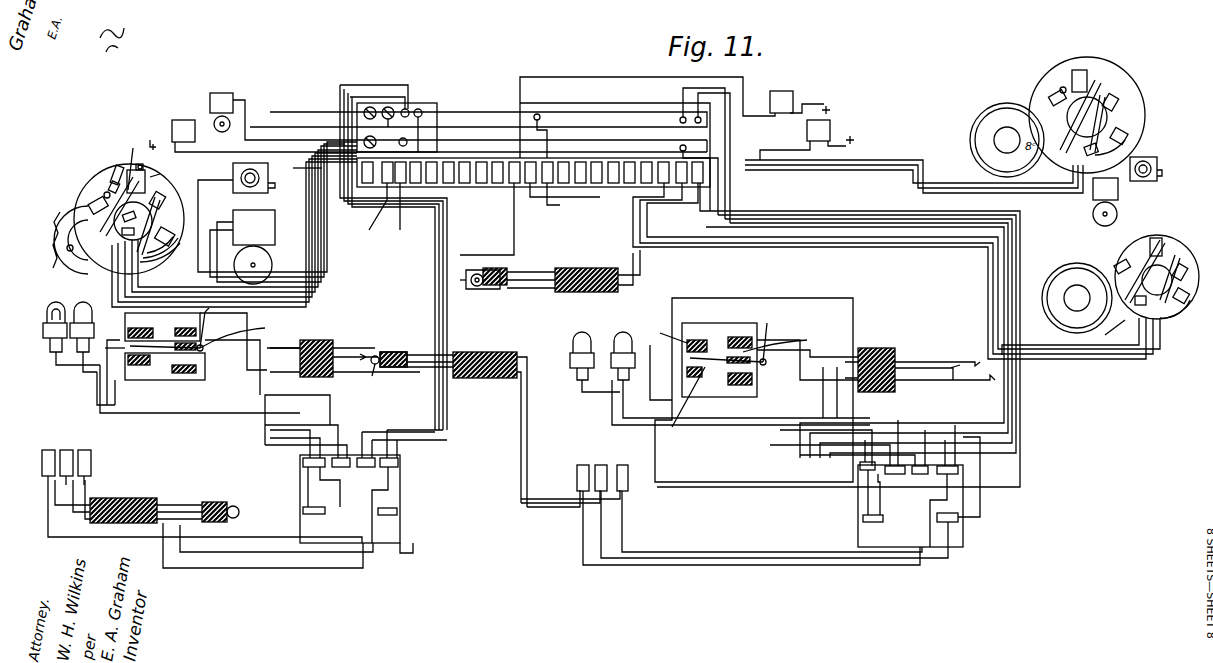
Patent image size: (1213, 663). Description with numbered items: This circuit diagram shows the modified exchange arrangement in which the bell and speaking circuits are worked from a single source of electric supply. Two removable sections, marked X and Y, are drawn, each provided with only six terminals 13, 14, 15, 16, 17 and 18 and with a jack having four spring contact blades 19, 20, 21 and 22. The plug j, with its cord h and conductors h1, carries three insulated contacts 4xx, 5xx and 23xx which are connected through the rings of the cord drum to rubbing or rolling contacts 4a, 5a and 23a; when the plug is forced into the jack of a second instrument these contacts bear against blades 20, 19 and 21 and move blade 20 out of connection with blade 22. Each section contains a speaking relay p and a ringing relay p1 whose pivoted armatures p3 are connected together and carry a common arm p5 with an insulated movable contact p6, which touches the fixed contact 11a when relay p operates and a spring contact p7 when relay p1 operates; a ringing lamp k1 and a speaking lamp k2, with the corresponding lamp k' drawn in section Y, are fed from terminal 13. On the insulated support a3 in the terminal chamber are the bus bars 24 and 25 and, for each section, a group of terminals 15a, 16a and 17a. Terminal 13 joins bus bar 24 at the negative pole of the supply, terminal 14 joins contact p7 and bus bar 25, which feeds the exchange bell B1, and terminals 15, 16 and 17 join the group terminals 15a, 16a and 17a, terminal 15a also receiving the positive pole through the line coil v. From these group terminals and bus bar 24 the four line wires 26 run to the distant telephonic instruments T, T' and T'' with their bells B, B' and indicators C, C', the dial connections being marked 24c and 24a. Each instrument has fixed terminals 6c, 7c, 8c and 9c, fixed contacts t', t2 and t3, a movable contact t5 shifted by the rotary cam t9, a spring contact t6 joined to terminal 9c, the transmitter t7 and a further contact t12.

The telephonic instrument T is at (117, 219).
The second dial switch T' is at (1080, 103).
The third dial switch T'' is at (1137, 272).
The fixed contact t2 is at (126, 160).
The fixed contact t3 is at (129, 220).
The movable contact t5 is at (161, 204).
The spring contact t6 is at (142, 166).
The telephonic transmitter t7 is at (104, 192).
The rotary cam t9 is at (129, 236).
The contact t12 is at (160, 176).
The fixed contact t' is at (166, 242).
The fixed terminal 6c is at (92, 207).
The fixed terminal 7c is at (161, 257).
The fixed terminal 8c is at (70, 240).
The fixed terminal 9c is at (148, 170).
The dial leads 24c is at (217, 228).
The leads 24a is at (1095, 360).
The telephone bell B is at (283, 214).
The exchange bell B1 is at (458, 104).
The battery B' is at (1088, 211).
The indicator C is at (277, 207).
The condenser C' is at (1143, 183).
The line coil v is at (502, 118).
The line wires 26 is at (683, 175).
The bus bar 24 is at (490, 154).
The bus bar 25 is at (649, 176).
The insulated support a3 is at (610, 94).
The terminal 15 is at (362, 178).
The group terminal 15a is at (662, 197).
The group terminal 16a is at (692, 200).
The group terminal 17a is at (745, 187).
The plug contact 4xx is at (560, 204).
The plug contact 5xx is at (512, 185).
The plug contact 23xx is at (500, 200).
The station X is at (393, 257).
The station Y is at (901, 287).
The jack spring contact blade 19 is at (392, 376).
The jack spring contact blade 20 is at (338, 350).
The jack spring contact blade 21 is at (360, 345).
The jack spring contact blade 22 is at (336, 378).
The plug j is at (150, 497).
The plug h is at (120, 500).
The conductors h1 is at (524, 427).
The terminal 13 is at (303, 462).
The terminal 14 is at (338, 467).
The terminal 16 is at (398, 462).
The terminal 17 is at (303, 511).
The terminal 18 is at (397, 513).
The drum contact 5a is at (48, 450).
The drum contact 23a is at (66, 450).
The drum contact 4a is at (92, 462).
The ringing lamp k1 is at (82, 330).
The speaking lamp k2 is at (328, 340).
The lamp k' is at (740, 372).
The speaking relay p is at (178, 373).
The ringing relay p1 is at (150, 329).
The pivoted armatures p3 is at (795, 325).
The common arm p5 is at (512, 329).
The movable contact p6 is at (735, 425).
The spring contact p7 is at (168, 355).
The fixed contact 11a is at (393, 326).